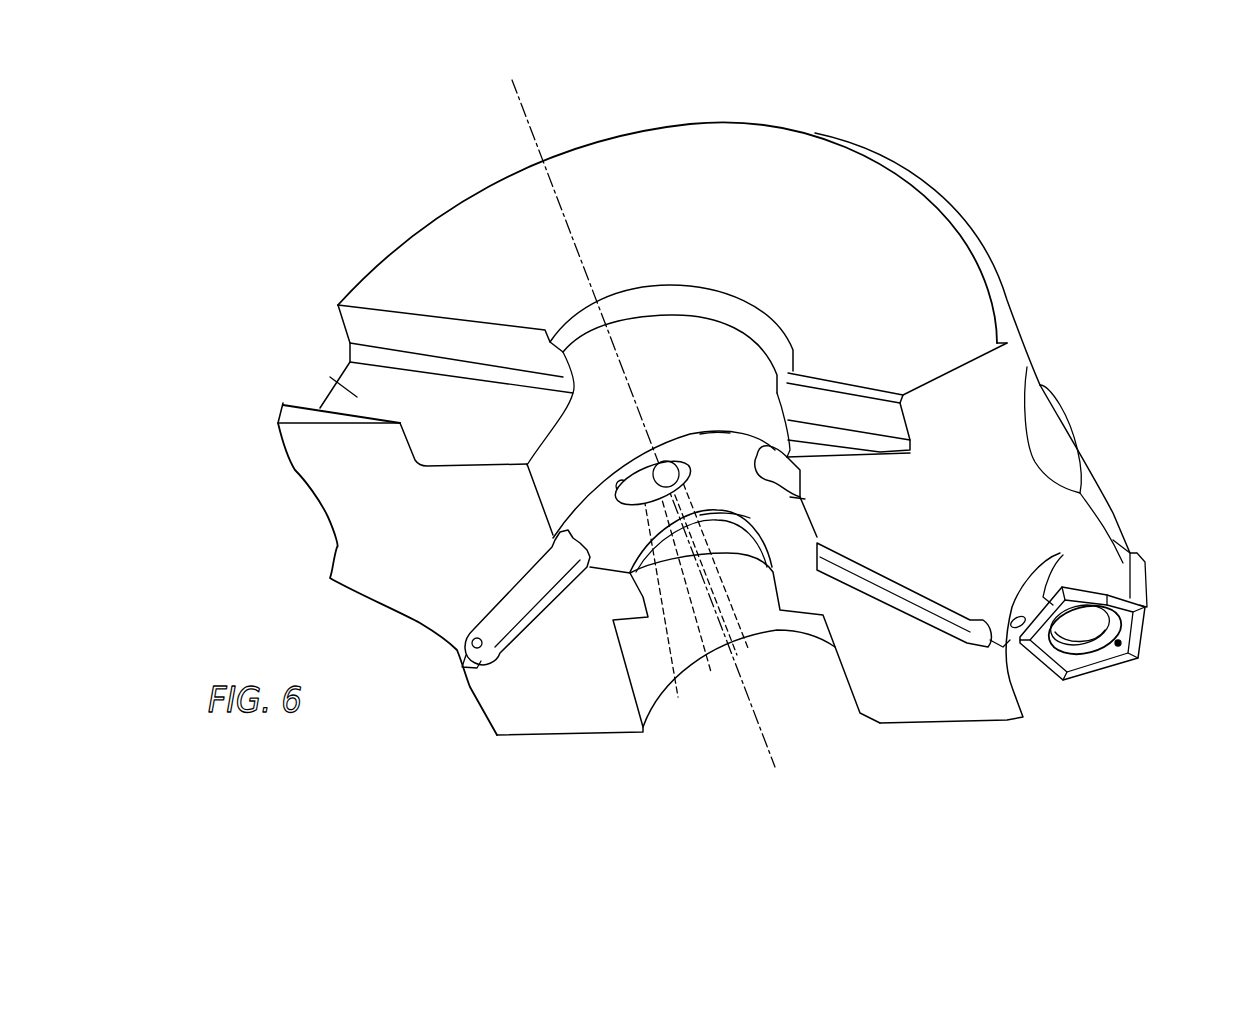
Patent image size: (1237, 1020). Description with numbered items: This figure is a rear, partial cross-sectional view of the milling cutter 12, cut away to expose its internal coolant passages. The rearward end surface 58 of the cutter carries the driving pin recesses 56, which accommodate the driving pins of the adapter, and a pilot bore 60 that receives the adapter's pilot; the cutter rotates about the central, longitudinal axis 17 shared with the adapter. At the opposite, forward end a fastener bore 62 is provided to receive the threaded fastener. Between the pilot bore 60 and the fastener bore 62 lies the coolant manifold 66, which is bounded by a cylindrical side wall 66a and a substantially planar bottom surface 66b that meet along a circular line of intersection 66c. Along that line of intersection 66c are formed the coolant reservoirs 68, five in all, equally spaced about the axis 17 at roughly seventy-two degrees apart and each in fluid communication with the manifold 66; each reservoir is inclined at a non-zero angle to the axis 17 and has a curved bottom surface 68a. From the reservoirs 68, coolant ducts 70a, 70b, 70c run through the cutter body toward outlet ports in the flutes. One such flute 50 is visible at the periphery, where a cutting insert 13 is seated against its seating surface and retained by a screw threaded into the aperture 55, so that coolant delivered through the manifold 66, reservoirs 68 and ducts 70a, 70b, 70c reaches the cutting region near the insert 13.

The milling cutter 12 is at (336, 157).
The cutting insert 13 is at (1098, 683).
The central longitudinal axis 17 is at (523, 118).
The flute 50 is at (1025, 675).
The aperture 55 is at (1118, 634).
The driving pin recess 56 is at (356, 396).
The rearward end surface 58 is at (797, 188).
The pilot bore 60 is at (660, 356).
The fastener bore 62 is at (777, 707).
The coolant manifold 66 is at (597, 500).
The cylindrical side wall 66a is at (726, 440).
The bottom surface 66b is at (718, 490).
The circular line of intersection 66c is at (741, 462).
The coolant reservoir 68 is at (671, 460).
The curved bottom surface 68a is at (640, 457).
The coolant duct 70a is at (745, 650).
The coolant duct 70b is at (693, 591).
The coolant duct 70c is at (669, 603).